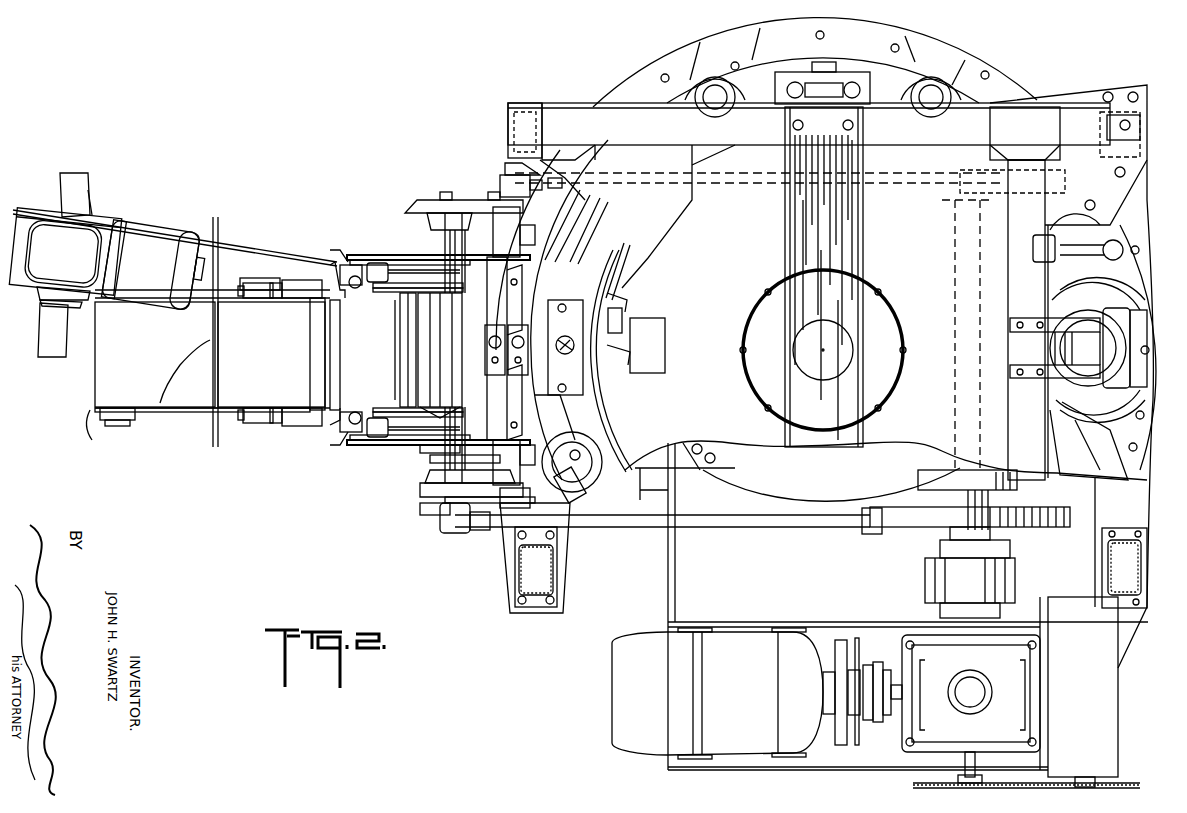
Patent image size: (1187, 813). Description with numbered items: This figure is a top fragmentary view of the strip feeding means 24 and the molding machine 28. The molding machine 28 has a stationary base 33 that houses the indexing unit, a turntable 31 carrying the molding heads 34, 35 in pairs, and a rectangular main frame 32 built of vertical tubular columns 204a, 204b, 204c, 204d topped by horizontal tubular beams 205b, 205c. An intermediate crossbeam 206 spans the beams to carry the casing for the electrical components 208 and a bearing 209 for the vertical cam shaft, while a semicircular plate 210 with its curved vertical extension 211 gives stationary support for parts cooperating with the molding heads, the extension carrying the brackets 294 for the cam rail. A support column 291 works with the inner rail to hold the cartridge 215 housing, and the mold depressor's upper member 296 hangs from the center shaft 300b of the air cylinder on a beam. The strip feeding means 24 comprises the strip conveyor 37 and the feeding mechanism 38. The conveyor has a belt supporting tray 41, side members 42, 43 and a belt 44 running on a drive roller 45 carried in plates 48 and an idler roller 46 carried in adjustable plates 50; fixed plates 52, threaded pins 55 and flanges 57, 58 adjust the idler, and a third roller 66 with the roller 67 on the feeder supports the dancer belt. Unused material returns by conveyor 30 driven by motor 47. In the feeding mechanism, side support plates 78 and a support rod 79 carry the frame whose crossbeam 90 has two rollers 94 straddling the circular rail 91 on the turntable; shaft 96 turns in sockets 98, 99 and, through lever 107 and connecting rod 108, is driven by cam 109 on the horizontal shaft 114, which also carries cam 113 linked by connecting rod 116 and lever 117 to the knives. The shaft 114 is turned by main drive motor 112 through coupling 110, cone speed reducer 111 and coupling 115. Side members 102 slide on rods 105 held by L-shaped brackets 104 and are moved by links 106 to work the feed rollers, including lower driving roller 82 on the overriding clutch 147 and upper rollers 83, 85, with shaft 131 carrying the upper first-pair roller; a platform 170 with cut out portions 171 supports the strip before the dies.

The strip feeding means 24 is at (225, 481).
The molding machine 28 is at (626, 590).
The conveyor 30 is at (268, 268).
The turntable 31 is at (1010, 72).
The main frame 32 is at (547, 100).
The stationary base 33 is at (840, 477).
The molding head 34 is at (792, 72).
The molding head 35 is at (855, 72).
The strip conveyor 37 is at (88, 389).
The feeding mechanism 38 is at (405, 210).
The belt supporting tray 41 is at (192, 410).
The side member 42 is at (230, 420).
The side member 43 is at (228, 260).
The belt 44 is at (160, 357).
The first roller 45 is at (110, 429).
The second roller 46 is at (305, 410).
The motor 47 is at (160, 250).
The plates 48 is at (150, 412).
The adjustable plates 50 is at (337, 262).
The fixed plates 52 is at (250, 298).
The threaded pins 55 is at (268, 298).
The flanges 57 is at (285, 280).
The flanges 58 is at (245, 286).
The third roller 66 is at (343, 355).
The roller 67 is at (398, 390).
The side support plates 78 is at (420, 508).
The support rod 79 is at (516, 232).
The lower roller 82 is at (402, 362).
The upper roller 83 is at (440, 362).
The upper roller 85 is at (448, 380).
The crossbeam 90 is at (548, 440).
The rail 91 is at (905, 42).
The rollers 94 is at (490, 337).
The shaft 96 is at (440, 455).
The socket 98 is at (428, 485).
The socket 99 is at (532, 190).
The side members 102 is at (385, 258).
The L-shaped brackets 104 is at (345, 285).
The rods 105 is at (362, 290).
The links 106 is at (395, 270).
The lever 107 is at (495, 527).
The connecting rod 108 is at (718, 515).
The cam 109 is at (910, 518).
The coupling 110 is at (870, 668).
The cone speed reducer 111 is at (980, 668).
The main drive motor 112 is at (742, 700).
The cam 113 is at (1060, 180).
The shaft 114 is at (955, 233).
The coupling 115 is at (1015, 585).
The connecting rod 116 is at (565, 178).
The lever 117 is at (520, 172).
The shaft 131 is at (402, 339).
The overriding clutch 147 is at (430, 465).
The platform 170 is at (472, 305).
The cut out portions 171 is at (1090, 672).
The vertical tubular column 204a is at (519, 572).
The vertical tubular column 204b is at (520, 120).
The vertical tubular column 204c is at (1108, 150).
The vertical tubular column 204d is at (1106, 564).
The horizontal tubular beam 205b is at (708, 137).
The horizontal tubular beam 205c is at (1035, 216).
The intermediate crossbeam 206 is at (840, 241).
The electrical components 208 is at (895, 318).
The bearing 209 is at (830, 372).
The semicircular plate 210 is at (655, 228).
The curved vertical extension 211 is at (616, 262).
The cartridge 215 is at (1055, 297).
The support column 291 is at (612, 367).
The brackets 294 is at (640, 256).
The upper member 296 is at (608, 290).
The center shaft 300b is at (573, 333).